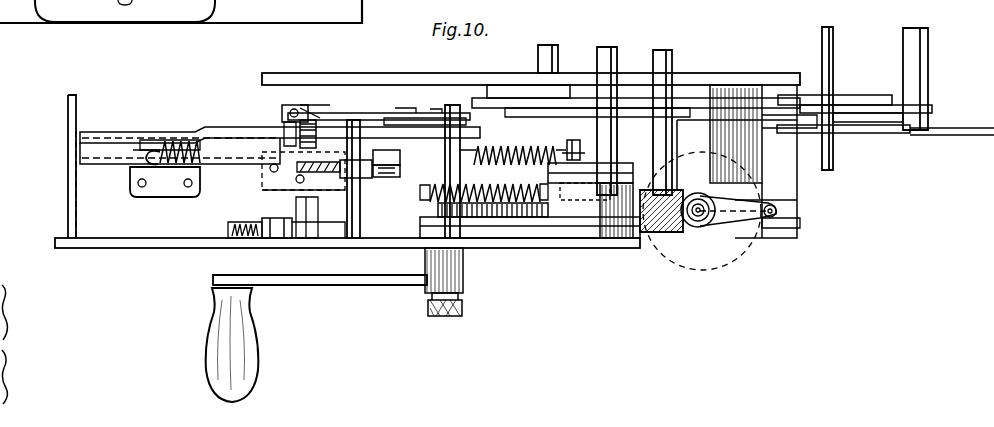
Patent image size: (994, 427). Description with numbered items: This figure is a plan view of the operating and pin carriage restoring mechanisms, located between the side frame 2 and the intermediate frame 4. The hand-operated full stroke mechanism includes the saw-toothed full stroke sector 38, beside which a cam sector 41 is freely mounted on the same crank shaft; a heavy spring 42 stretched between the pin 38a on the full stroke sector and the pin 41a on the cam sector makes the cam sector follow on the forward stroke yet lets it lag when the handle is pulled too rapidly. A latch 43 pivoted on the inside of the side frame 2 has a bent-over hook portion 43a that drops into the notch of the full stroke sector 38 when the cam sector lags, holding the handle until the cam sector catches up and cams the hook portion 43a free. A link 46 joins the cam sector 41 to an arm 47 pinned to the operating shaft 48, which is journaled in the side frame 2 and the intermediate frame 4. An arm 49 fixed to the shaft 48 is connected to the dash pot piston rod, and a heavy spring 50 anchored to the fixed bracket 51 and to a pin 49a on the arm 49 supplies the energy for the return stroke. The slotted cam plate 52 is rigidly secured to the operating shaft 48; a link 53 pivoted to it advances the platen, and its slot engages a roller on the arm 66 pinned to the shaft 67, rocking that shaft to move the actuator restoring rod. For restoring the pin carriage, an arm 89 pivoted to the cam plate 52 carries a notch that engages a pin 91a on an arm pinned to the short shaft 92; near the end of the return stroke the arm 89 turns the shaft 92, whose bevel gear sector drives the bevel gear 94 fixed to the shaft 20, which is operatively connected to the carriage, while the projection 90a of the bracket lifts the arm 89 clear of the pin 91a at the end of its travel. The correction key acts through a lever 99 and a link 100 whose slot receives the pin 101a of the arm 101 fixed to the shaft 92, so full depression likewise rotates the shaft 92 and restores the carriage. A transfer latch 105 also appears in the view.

The side frame 2 is at (137, 249).
The intermediate frame 4 is at (335, 73).
The shaft 20 is at (106, 128).
The full stroke sector 38 is at (540, 206).
The pin 38a is at (412, 240).
The cam sector 41 is at (488, 220).
The pin 41a is at (598, 232).
The heavy spring 42 is at (512, 205).
The latch 43 is at (292, 240).
The hook portion 43a is at (336, 240).
The link 46 is at (635, 220).
The arm 47 is at (684, 228).
The operating shaft 48 is at (597, 57).
The arm 49 is at (578, 183).
The pin 49a is at (573, 140).
The heavy spring 50 is at (197, 175).
The fixed bracket 51 is at (145, 165).
The slotted cam plate 52 is at (632, 108).
The link 53 is at (700, 110).
The arm 66 is at (524, 92).
The shaft 67 is at (553, 48).
The arm 89 is at (520, 140).
The projection 90a is at (305, 105).
The pin 91a is at (385, 103).
The short shaft 92 is at (360, 205).
The beveled gear 94 is at (292, 133).
The lever 99 is at (400, 152).
The link 100 is at (400, 168).
The arm 101 is at (372, 163).
The pin 101a is at (374, 182).
The latch 105 is at (660, 57).